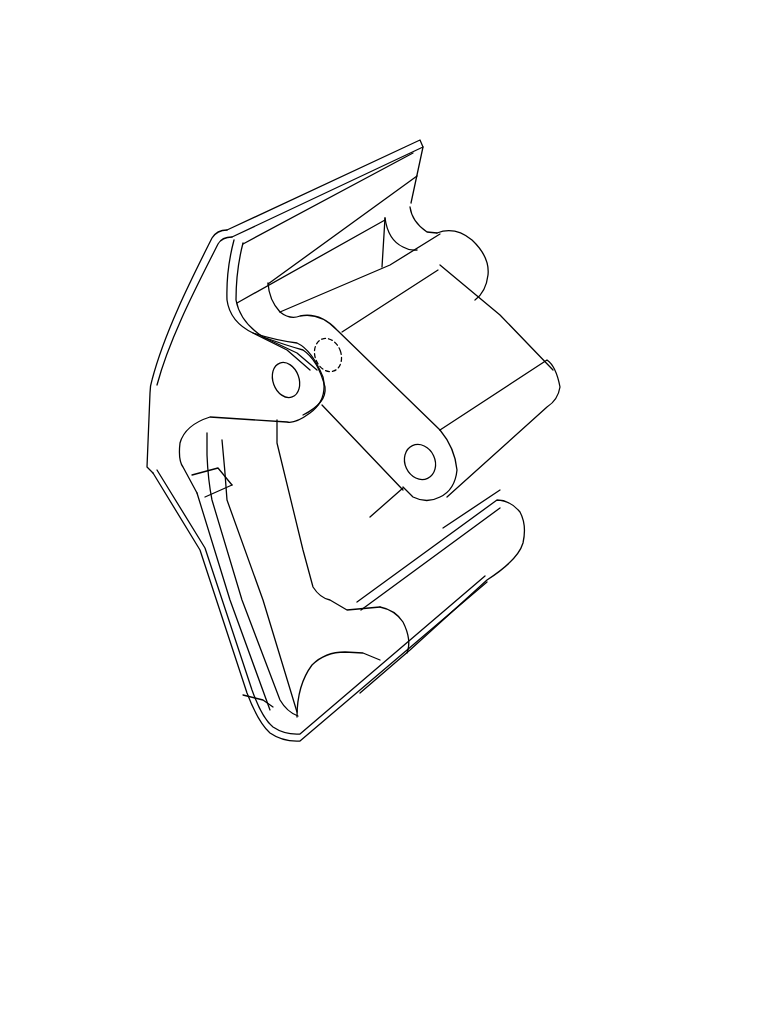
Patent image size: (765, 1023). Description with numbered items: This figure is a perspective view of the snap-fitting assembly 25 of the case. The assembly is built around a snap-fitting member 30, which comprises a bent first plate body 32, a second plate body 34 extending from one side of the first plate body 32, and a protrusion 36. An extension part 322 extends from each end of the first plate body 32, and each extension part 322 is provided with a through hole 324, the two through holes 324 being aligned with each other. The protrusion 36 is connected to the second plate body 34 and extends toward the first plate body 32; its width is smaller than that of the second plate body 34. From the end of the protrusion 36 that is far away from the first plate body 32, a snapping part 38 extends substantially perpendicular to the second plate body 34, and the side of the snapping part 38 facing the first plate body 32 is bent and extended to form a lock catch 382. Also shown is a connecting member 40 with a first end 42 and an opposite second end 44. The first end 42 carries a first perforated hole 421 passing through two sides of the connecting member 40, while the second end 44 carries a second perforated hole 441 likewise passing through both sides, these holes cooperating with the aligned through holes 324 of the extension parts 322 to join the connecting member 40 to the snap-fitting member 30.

The support assembly 25 is at (323, 62).
The snap-fitting member 30 is at (128, 518).
The first plate body 32 is at (180, 338).
The extension part 322 is at (222, 398).
The through hole 324 is at (273, 378).
The second plate body 34 is at (237, 642).
The protrusion 36 is at (277, 533).
The snapping part 38 is at (383, 632).
The lock catch 382 is at (440, 560).
The connecting member 40 is at (448, 300).
The first end 42 is at (530, 383).
The first perforated hole 421 is at (430, 462).
The second end 44 is at (437, 233).
The second perforated hole 441 is at (340, 352).